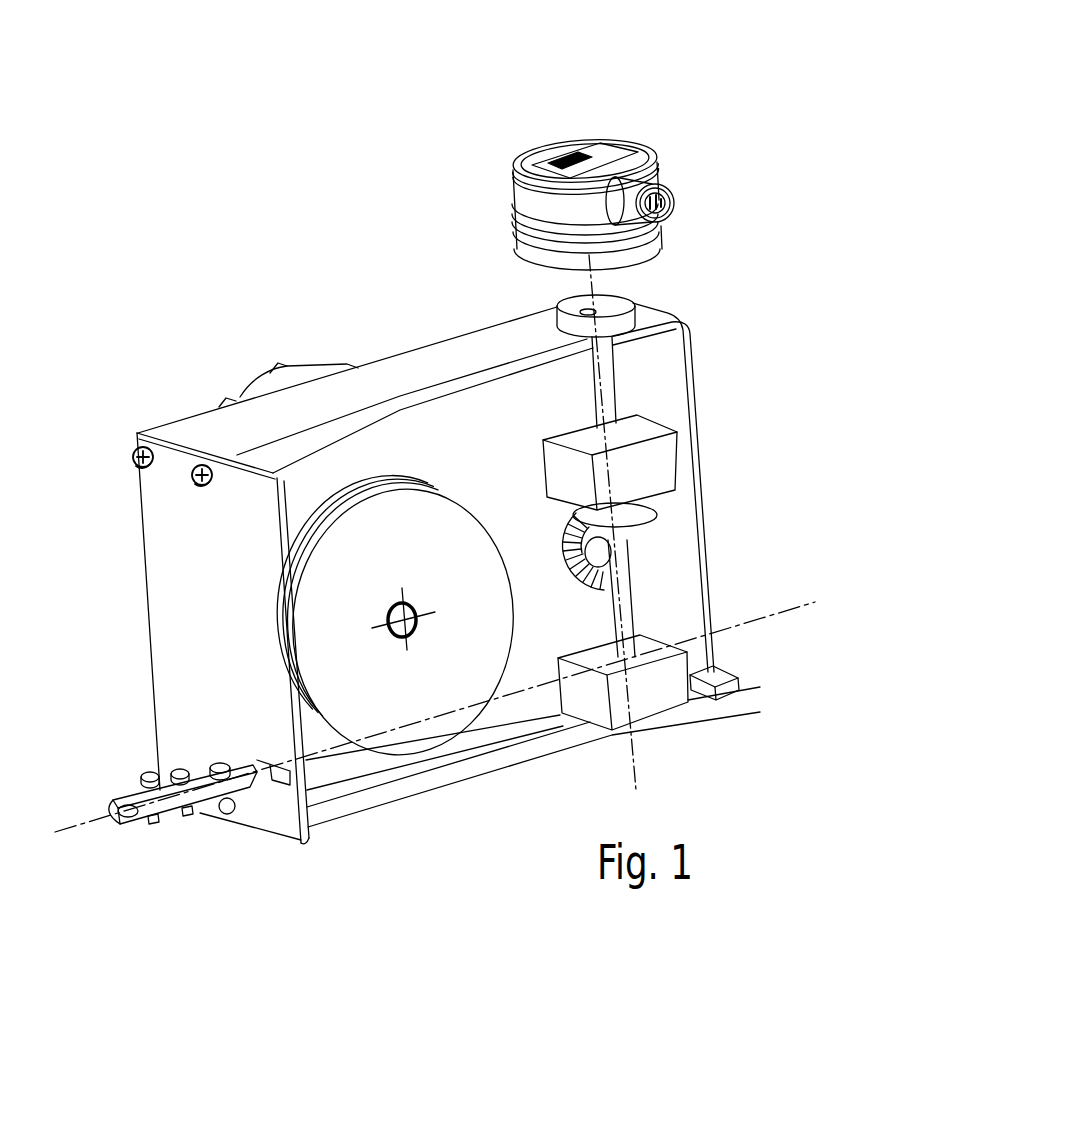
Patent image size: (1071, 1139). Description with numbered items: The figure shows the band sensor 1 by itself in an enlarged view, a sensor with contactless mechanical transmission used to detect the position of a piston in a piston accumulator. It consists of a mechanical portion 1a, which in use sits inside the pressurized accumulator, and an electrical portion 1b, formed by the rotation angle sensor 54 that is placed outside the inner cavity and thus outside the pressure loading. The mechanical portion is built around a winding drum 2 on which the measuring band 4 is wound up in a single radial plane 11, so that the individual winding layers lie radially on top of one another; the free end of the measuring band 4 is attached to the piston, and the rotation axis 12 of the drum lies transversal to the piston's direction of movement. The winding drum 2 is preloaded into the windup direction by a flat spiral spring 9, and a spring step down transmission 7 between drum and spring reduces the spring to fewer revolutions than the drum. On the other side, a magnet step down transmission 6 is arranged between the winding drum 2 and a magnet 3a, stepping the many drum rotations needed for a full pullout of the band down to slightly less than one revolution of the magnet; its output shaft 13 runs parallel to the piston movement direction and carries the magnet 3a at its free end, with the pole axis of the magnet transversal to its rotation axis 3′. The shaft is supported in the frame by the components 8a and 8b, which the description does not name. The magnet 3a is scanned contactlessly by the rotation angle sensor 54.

The band sensor 1 is at (310, 193).
The mechanical portion 1a is at (838, 283).
The electrical portion 1b is at (805, 146).
The winding drum 2 is at (395, 445).
The single radial plane 11 is at (416, 480).
The rotation axis 12 is at (417, 625).
The magnet 3a is at (633, 293).
The rotation axis 3′ is at (603, 398).
The output shaft 13 is at (652, 497).
The measuring band 4 is at (258, 780).
The magnet step down transmission 6 is at (630, 533).
The spring step down transmission 7 is at (208, 438).
The upper bearing block 8a is at (682, 423).
The lower bearing block 8b is at (689, 681).
The flat spiral spring 9 is at (283, 362).
The rotation angle sensor 54 is at (642, 133).